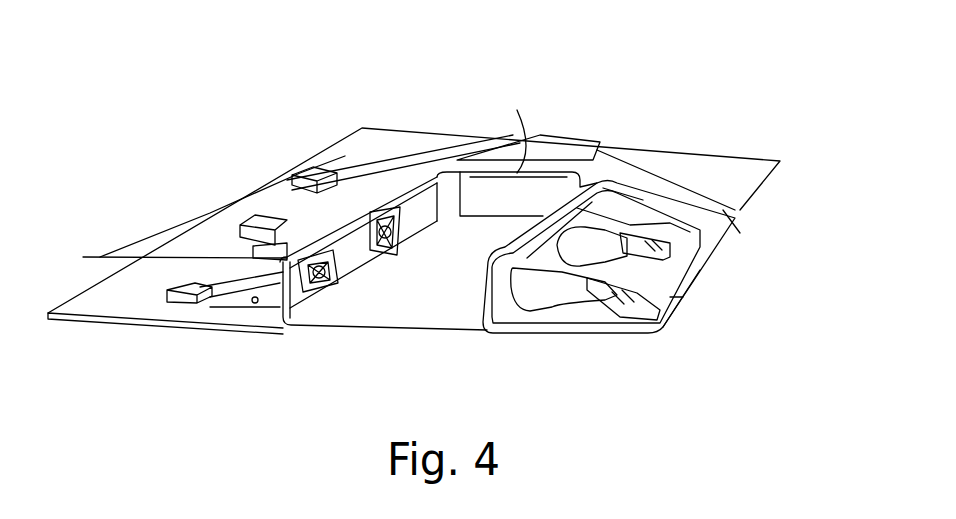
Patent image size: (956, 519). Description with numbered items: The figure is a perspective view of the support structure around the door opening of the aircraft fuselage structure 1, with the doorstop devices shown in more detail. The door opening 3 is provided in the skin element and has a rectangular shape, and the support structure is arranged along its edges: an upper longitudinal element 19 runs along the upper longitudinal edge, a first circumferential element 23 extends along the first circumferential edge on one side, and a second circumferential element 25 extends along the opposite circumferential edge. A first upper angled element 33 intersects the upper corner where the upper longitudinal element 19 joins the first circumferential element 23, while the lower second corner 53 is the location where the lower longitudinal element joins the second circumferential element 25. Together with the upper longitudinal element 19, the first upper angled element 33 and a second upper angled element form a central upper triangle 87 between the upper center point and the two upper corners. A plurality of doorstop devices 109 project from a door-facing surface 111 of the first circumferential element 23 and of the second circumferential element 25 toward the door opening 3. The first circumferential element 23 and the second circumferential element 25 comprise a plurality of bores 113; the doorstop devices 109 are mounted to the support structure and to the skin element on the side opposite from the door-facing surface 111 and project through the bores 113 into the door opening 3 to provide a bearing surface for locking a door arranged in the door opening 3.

The aircraft fuselage structure 1 is at (813, 110).
The door opening 3 is at (441, 306).
The upper longitudinal element 19 is at (510, 140).
The first circumferential element 23 is at (310, 222).
The second circumferential element 25 is at (708, 256).
The first upper angled element 33 is at (512, 130).
The lower second corner 53 is at (590, 145).
The central upper triangle 87 is at (575, 150).
The doorstop devices 109 is at (267, 233).
The door-facing surface 111 is at (340, 197).
The bores 113 is at (397, 257).